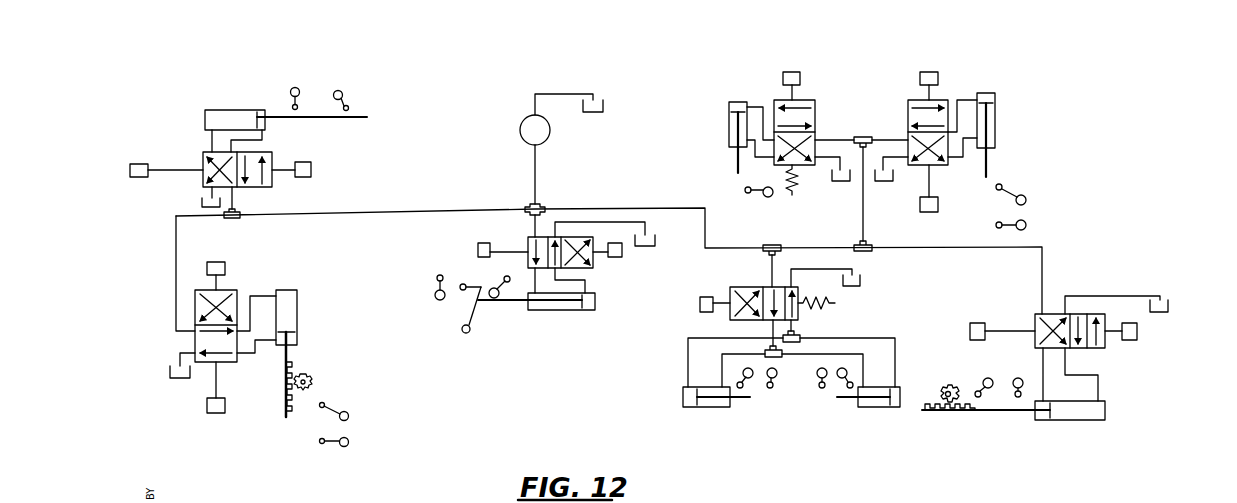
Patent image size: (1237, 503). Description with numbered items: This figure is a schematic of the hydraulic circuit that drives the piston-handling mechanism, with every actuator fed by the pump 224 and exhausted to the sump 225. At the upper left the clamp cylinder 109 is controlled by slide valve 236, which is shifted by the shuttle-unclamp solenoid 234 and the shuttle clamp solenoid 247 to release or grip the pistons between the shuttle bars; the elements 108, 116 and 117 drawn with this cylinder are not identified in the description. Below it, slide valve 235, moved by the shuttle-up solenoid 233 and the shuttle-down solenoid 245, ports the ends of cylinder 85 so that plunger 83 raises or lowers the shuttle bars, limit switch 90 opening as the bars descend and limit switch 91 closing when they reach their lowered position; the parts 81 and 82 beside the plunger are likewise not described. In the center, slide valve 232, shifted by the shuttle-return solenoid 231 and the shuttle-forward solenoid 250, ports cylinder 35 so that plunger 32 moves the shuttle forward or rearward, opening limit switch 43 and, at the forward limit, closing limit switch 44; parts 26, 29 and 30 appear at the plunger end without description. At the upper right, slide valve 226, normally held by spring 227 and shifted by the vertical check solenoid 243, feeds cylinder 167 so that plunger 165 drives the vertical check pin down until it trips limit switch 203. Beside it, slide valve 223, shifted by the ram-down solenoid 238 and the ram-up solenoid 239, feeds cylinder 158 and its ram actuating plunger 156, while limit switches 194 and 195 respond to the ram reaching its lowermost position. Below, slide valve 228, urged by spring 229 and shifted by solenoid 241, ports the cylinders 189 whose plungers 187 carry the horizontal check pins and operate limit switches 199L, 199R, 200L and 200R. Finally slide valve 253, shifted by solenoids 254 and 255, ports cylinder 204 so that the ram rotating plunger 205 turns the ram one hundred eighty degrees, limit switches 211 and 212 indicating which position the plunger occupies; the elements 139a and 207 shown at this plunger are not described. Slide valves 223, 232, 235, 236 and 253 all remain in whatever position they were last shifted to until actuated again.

The cylinder 109 is at (221, 112).
The piston rod 108 is at (328, 118).
The limit switch 116 is at (292, 88).
The limit switch 117 is at (341, 91).
The slide valve 236 is at (258, 188).
The shuttle-unclamp solenoid 234 is at (142, 163).
The shuttle clamp solenoid 247 is at (309, 170).
The sump 225 is at (1186, 297).
The shuttle-down solenoid 245 is at (212, 262).
The slide valve 235 is at (200, 340).
The shuttle-up solenoid 233 is at (207, 404).
The cylinder 85 is at (292, 305).
The plunger 83 is at (292, 352).
The rack 82 is at (286, 378).
The pinion gear 81 is at (310, 376).
The limit switch 90 is at (343, 411).
The limit switch 91 is at (344, 447).
The pump 224 is at (550, 133).
The slide valve 232 is at (528, 243).
The shuttle-return solenoid 231 is at (478, 245).
The shuttle-forward solenoid 250 is at (618, 258).
The cylinder 35 is at (572, 308).
The plunger 32 is at (500, 302).
The lever arm 26 is at (470, 315).
The pivot 29 is at (479, 284).
The pivot pin 30 is at (460, 284).
The limit switch 43 is at (518, 267).
The limit switch 44 is at (436, 279).
The vertical check solenoid 243 is at (792, 72).
The slide valve 226 is at (808, 122).
The cylinder 167 is at (731, 122).
The plunger 165 is at (736, 155).
The limit switch 203 is at (762, 197).
The spring 227 is at (790, 198).
The slide valve 223 is at (905, 108).
The ram-down solenoid 238 is at (928, 72).
The ram-up solenoid 239 is at (928, 213).
The hydraulic cylinder 158 is at (990, 112).
The ram actuating plunger 156 is at (990, 158).
The time delay limit switch 194 is at (1010, 190).
The limit switch 195 is at (1012, 222).
The slide valve 228 is at (797, 318).
The solenoid 241 is at (700, 304).
The spring 229 is at (840, 303).
The plunger 187 is at (718, 405).
The cylinder 189 is at (683, 400).
The limit switch 199L is at (745, 392).
The limit switch 199R is at (846, 392).
The limit switch 200L is at (792, 372).
The limit switch 200R is at (818, 378).
The pinion gear 139a is at (940, 386).
The rack 207 is at (935, 412).
The ram rotating plunger 205 is at (996, 412).
The cylinder 204 is at (1100, 408).
The slide valve 253 is at (1052, 316).
The solenoid 255 is at (978, 323).
The solenoid 254 is at (1137, 331).
The limit switch 212 is at (984, 379).
The limit switch 211 is at (1014, 379).